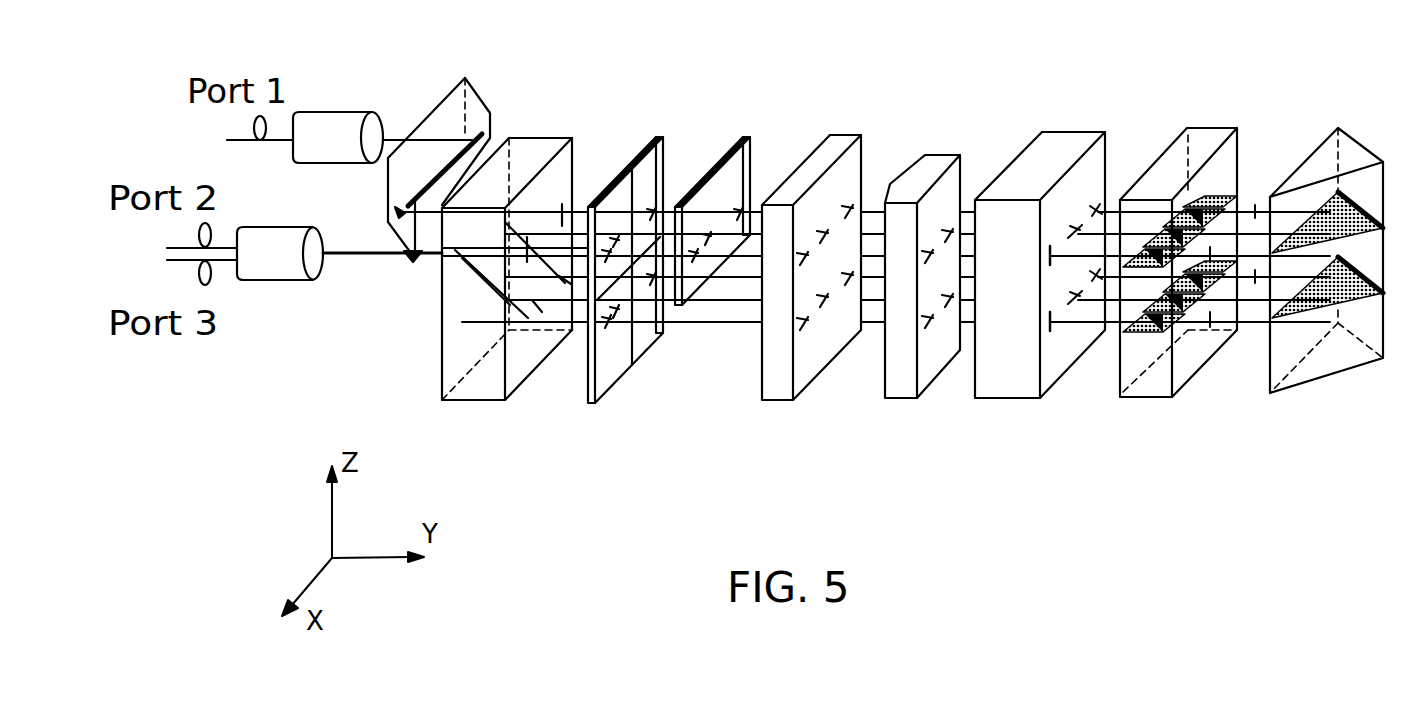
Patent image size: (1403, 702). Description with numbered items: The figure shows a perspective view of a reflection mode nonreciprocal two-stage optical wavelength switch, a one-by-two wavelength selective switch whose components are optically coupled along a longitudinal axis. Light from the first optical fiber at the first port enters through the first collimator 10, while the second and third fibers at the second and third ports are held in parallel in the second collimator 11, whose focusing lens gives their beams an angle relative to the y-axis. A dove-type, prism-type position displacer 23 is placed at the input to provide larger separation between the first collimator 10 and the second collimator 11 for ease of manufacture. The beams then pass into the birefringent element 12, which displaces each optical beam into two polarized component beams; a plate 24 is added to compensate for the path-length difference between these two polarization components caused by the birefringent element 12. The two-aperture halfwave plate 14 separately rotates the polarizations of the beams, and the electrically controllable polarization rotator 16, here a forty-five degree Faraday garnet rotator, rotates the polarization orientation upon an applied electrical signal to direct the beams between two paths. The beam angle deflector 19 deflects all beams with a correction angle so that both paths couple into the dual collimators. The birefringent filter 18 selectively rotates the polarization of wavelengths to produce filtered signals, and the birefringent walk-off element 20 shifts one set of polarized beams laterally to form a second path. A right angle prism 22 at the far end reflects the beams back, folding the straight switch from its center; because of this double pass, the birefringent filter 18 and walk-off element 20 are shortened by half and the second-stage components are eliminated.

The first collimator 10 is at (345, 108).
The second collimator 11 is at (285, 282).
The birefringent element 12 is at (540, 132).
The two-aperture halfwave plate 14 is at (652, 132).
The electrically controllable polarization rotator 16 is at (840, 122).
The birefringent filter 18 is at (1080, 122).
The beam angle deflector 19 is at (935, 133).
The birefringent walk-off element 20 is at (1209, 122).
The right angle prism 22 is at (1352, 125).
The prism-type position displacer 23 is at (467, 72).
The plate 24 is at (748, 132).